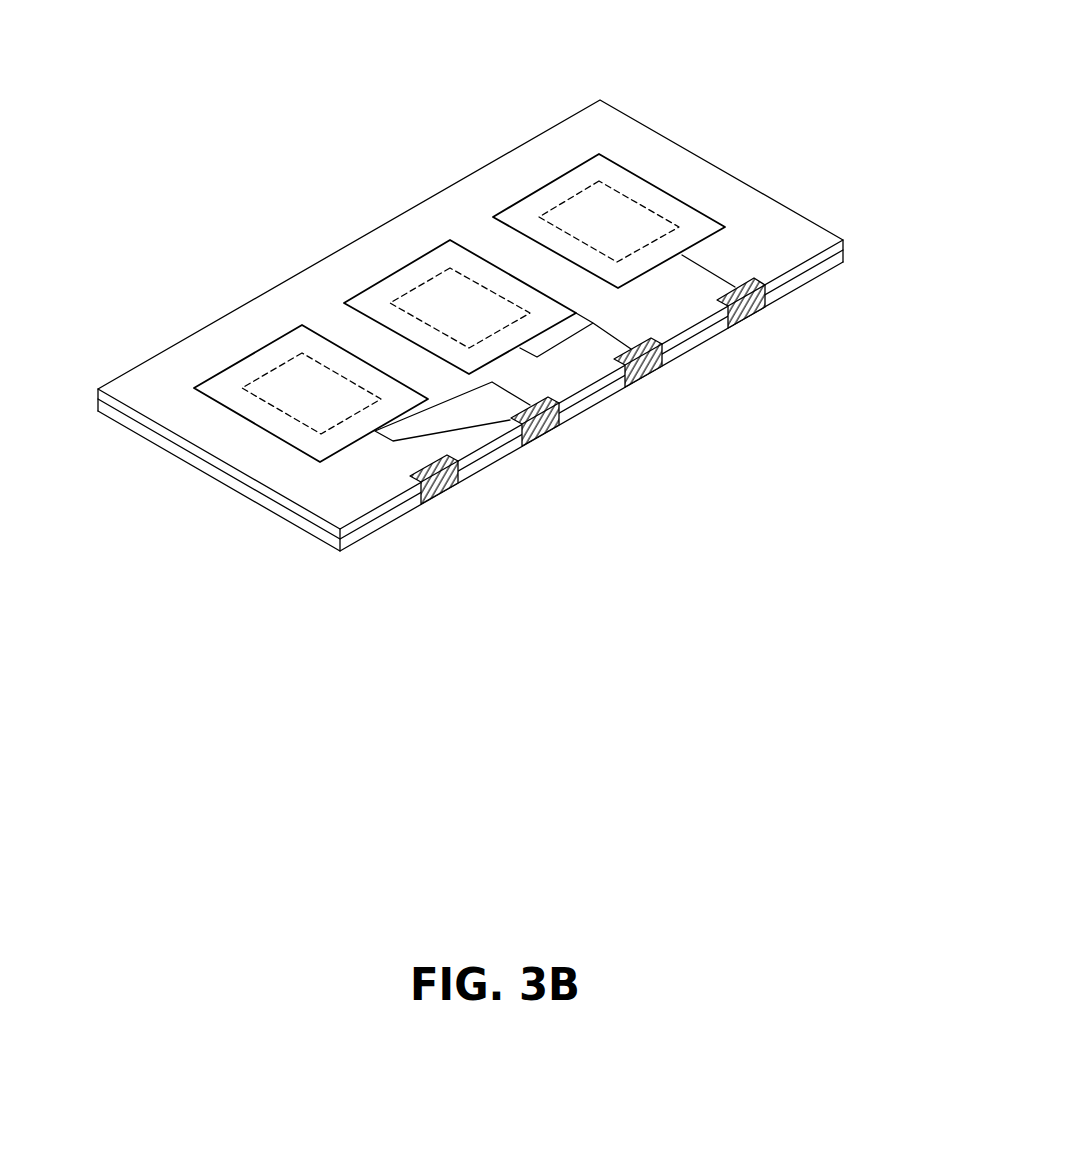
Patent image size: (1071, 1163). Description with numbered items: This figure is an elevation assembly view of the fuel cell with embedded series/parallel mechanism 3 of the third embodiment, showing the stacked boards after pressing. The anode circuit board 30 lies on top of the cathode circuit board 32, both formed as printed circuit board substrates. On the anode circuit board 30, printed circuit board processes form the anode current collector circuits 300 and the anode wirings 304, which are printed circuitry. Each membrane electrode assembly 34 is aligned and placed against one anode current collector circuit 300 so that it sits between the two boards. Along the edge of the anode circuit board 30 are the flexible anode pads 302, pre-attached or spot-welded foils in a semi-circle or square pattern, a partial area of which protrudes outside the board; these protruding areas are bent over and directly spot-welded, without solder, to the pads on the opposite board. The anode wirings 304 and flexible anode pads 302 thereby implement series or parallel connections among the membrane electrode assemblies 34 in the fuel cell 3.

The fuel cell with embedded series/parallel mechanism 3 is at (186, 140).
The anode circuit board 30 is at (839, 240).
The cathode circuit board 32 is at (812, 279).
The anode current collector circuit 300 is at (533, 203).
The membrane electrode assembly 34 is at (620, 214).
The flexible anode pad 302 is at (765, 307).
The anode wiring 304 is at (703, 263).